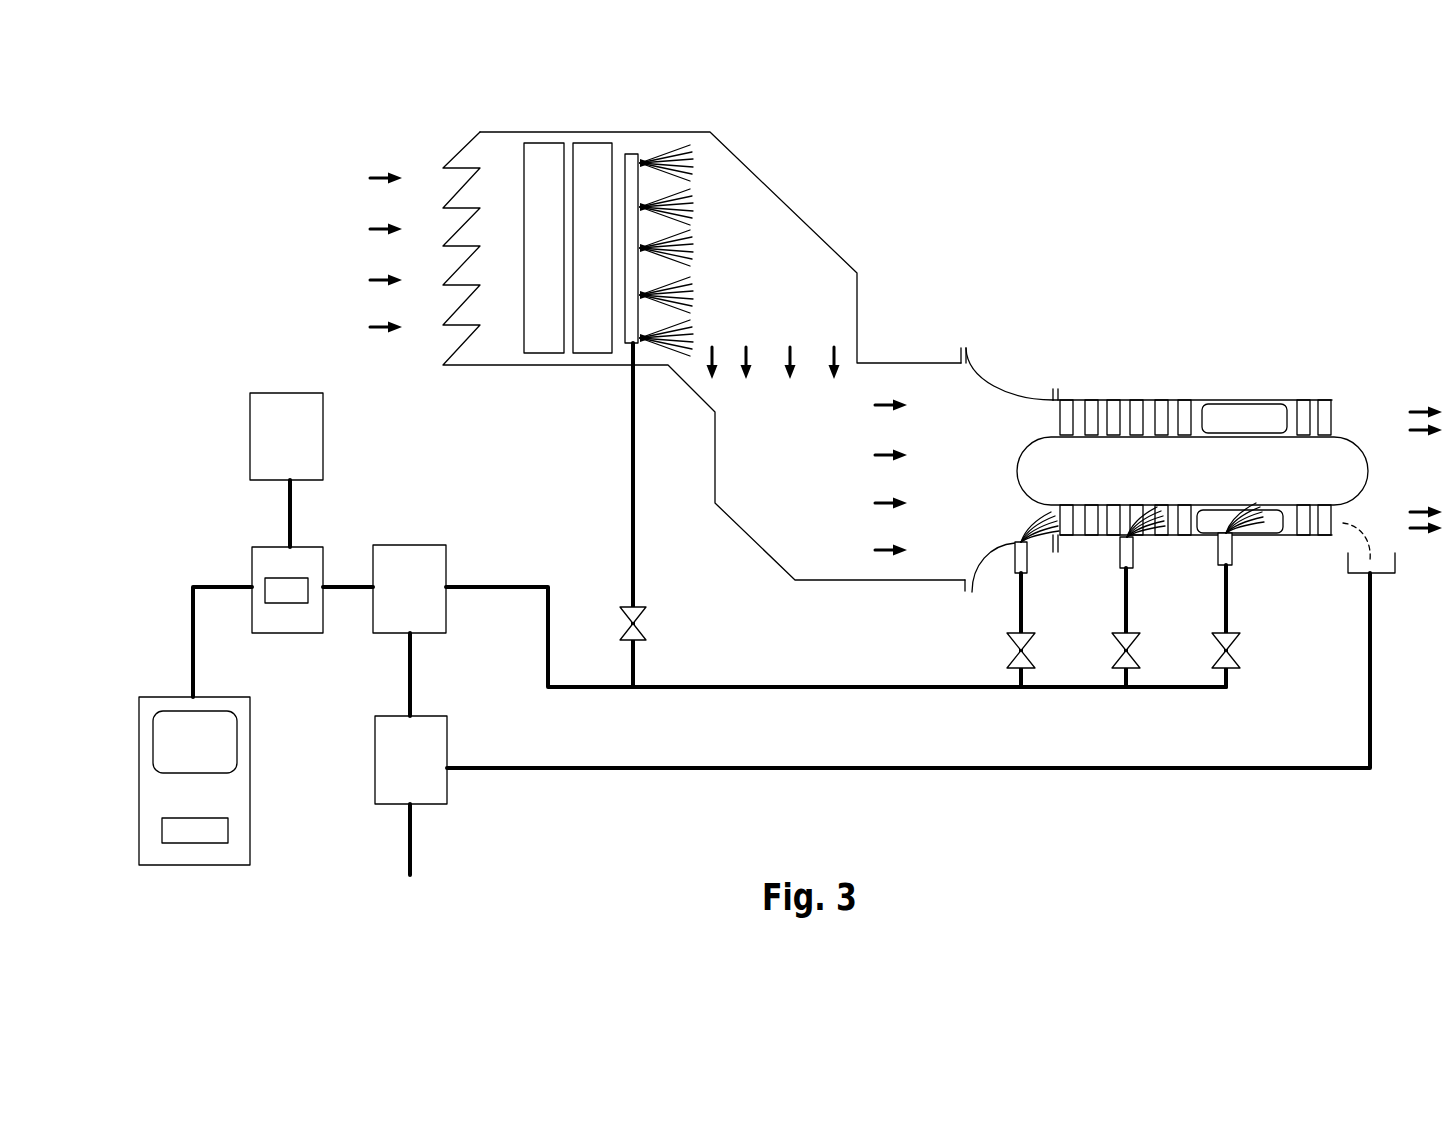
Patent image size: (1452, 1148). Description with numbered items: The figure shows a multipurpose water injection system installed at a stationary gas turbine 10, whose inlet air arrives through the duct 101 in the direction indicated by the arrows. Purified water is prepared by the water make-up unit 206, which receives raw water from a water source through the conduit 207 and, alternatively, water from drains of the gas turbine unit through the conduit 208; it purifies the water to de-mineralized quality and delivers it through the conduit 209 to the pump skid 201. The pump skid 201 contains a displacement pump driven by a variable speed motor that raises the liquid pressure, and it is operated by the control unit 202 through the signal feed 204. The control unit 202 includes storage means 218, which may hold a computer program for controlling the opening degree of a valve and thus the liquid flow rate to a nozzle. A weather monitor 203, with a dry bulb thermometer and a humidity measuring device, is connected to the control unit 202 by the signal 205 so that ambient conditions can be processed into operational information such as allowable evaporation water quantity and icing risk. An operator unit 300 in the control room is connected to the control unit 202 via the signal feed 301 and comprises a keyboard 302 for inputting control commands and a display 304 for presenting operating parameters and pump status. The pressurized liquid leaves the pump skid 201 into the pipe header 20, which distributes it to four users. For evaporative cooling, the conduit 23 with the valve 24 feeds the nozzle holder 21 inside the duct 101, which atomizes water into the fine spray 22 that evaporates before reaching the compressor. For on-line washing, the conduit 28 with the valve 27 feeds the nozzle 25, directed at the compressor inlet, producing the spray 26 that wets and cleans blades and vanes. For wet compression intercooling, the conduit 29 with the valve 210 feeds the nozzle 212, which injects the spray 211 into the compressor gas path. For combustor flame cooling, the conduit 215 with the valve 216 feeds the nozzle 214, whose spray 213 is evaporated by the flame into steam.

The gas turbine 10 is at (1162, 457).
The duct 101 is at (837, 255).
The pipe header 20 is at (485, 585).
The nozzle holder 21 is at (633, 155).
The spray 22 is at (680, 163).
The conduit 23 is at (632, 452).
The valve 24 is at (636, 612).
The nozzle 25 is at (1013, 558).
The spray 26 is at (1033, 543).
The valve 27 is at (1027, 642).
The conduit 28 is at (1019, 612).
The conduit 29 is at (1122, 595).
The pump skid 201 is at (420, 560).
The control unit 202 is at (300, 555).
The weather monitor 203 is at (300, 412).
The signal feed 204 is at (343, 592).
The signal 205 is at (296, 500).
The water make-up unit 206 is at (437, 795).
The conduit 207 is at (406, 823).
The conduit 208 is at (527, 772).
The conduit 209 is at (413, 667).
The valve 210 is at (1137, 645).
The spray 211 is at (1140, 538).
The nozzle 212 is at (1131, 570).
The spray 213 is at (1240, 536).
The nozzle 214 is at (1233, 570).
The conduit 215 is at (1228, 608).
The valve 216 is at (1235, 660).
The storage means 218 is at (291, 594).
The operator unit 300 is at (237, 780).
The signal feed 301 is at (208, 583).
The keyboard 302 is at (212, 827).
The display 304 is at (210, 741).